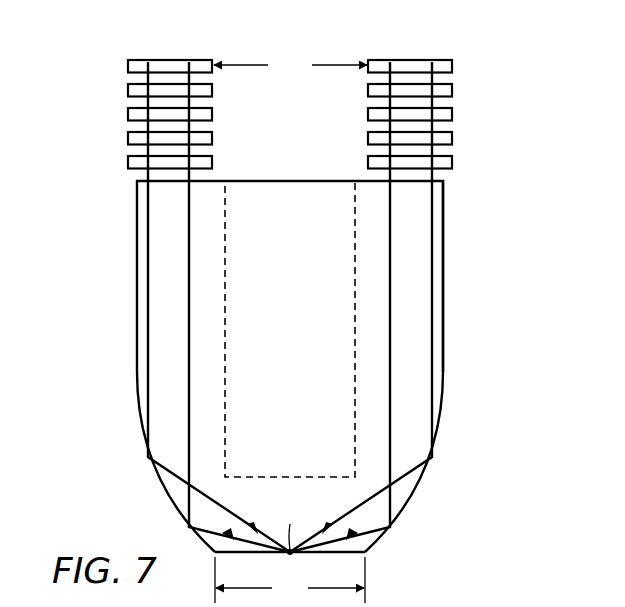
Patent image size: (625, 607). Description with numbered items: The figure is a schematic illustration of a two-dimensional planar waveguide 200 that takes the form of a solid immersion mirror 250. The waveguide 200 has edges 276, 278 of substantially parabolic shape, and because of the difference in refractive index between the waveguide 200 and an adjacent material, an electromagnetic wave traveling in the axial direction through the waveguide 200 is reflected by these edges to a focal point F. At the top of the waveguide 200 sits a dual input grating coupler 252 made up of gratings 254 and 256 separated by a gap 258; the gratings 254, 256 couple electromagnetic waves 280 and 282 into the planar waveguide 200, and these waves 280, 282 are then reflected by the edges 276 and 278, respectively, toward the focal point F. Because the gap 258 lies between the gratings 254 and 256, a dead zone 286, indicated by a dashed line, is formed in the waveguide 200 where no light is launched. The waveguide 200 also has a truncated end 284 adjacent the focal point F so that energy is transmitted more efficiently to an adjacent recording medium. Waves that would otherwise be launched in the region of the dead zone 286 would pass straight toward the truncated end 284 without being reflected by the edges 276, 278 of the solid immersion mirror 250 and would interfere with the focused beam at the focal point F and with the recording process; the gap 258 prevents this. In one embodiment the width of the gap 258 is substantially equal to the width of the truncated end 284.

The planar waveguide 200 is at (490, 254).
The solid immersion mirror 250 is at (137, 316).
The dual input grating coupler 252 is at (463, 52).
The grating 254 is at (128, 112).
The grating 256 is at (452, 112).
The gap 258 is at (309, 135).
The edge 276 is at (138, 384).
The edge 278 is at (439, 318).
The electromagnetic wave 280 is at (189, 241).
The electromagnetic wave 282 is at (392, 410).
The truncated end 284 is at (372, 540).
The dead zone 286 is at (355, 235).